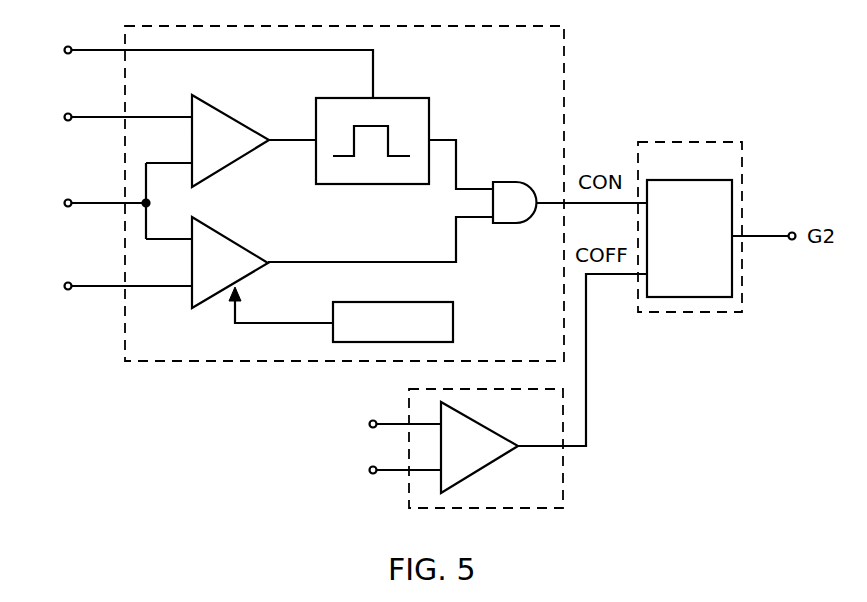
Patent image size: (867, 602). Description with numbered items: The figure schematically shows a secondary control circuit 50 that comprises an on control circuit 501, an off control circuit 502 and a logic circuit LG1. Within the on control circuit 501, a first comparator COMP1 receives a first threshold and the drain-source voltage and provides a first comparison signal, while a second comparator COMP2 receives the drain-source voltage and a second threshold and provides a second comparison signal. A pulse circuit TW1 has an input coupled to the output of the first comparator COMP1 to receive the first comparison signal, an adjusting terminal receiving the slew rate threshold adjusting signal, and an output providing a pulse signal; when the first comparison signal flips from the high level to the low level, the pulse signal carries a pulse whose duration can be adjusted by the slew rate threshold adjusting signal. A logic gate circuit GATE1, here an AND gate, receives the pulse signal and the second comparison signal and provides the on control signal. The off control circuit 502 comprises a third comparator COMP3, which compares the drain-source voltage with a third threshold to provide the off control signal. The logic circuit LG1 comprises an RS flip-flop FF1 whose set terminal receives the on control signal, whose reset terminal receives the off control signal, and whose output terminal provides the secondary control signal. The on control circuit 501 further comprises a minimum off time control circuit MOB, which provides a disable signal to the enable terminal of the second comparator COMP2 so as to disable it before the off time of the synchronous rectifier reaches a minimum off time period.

The secondary control circuit 50 is at (826, 62).
The on control circuit 501 is at (163, 362).
The off control circuit 502 is at (563, 476).
The first comparator COMP1 is at (240, 92).
The second comparator COMP2 is at (257, 224).
The third comparator COMP3 is at (520, 415).
The pulse circuit TW1 is at (412, 98).
The logic gate circuit GATE1 is at (525, 166).
The minimum off time control circuit MOB is at (393, 322).
The RS flip-flop FF1 is at (689, 225).
The logic circuit LG1 is at (703, 312).